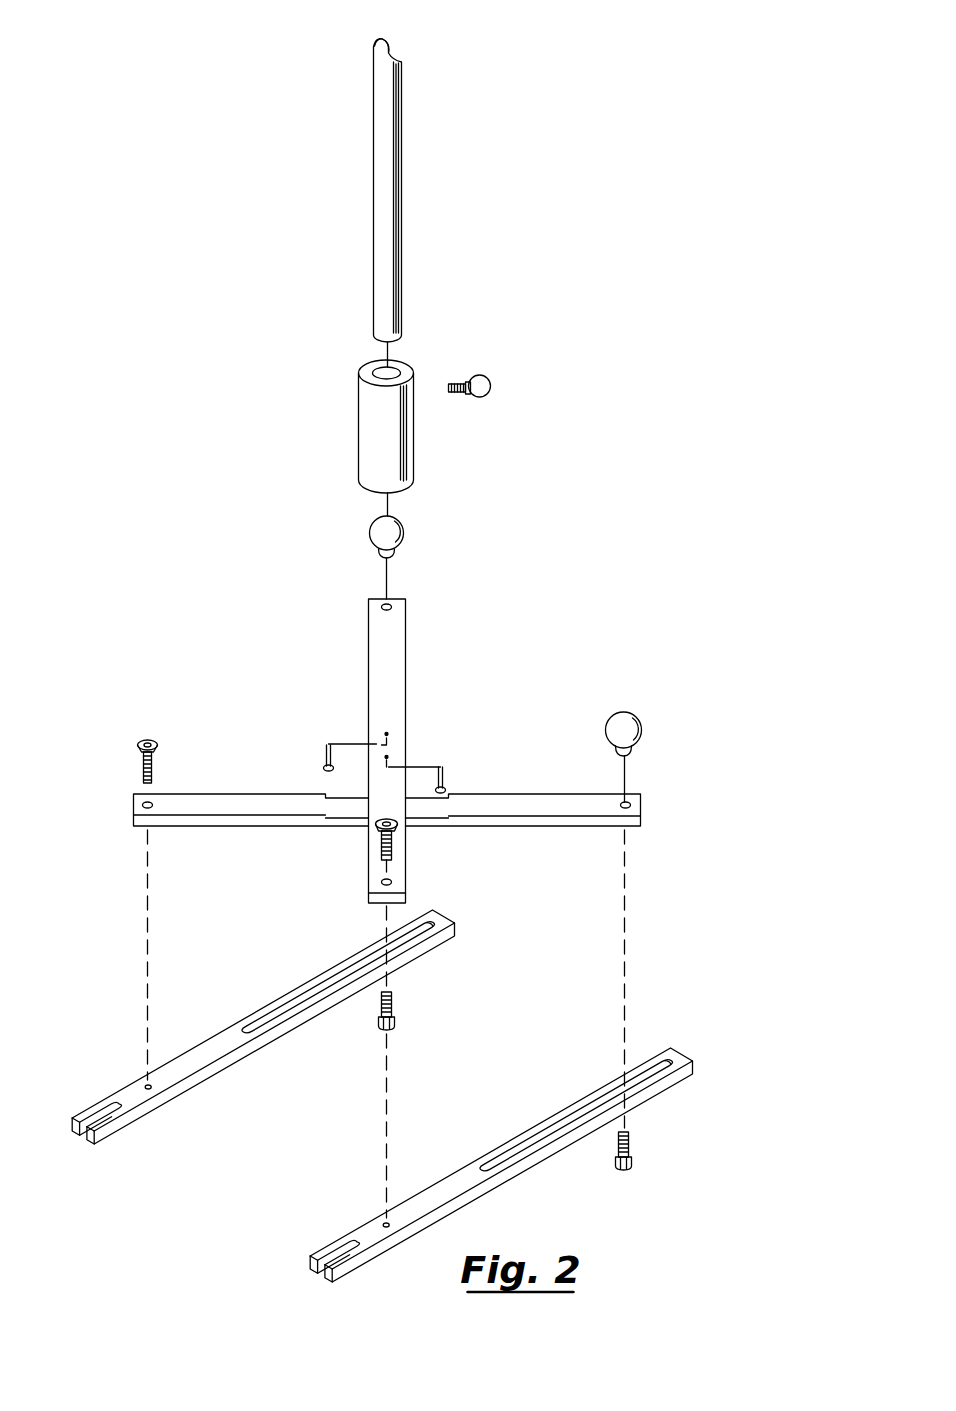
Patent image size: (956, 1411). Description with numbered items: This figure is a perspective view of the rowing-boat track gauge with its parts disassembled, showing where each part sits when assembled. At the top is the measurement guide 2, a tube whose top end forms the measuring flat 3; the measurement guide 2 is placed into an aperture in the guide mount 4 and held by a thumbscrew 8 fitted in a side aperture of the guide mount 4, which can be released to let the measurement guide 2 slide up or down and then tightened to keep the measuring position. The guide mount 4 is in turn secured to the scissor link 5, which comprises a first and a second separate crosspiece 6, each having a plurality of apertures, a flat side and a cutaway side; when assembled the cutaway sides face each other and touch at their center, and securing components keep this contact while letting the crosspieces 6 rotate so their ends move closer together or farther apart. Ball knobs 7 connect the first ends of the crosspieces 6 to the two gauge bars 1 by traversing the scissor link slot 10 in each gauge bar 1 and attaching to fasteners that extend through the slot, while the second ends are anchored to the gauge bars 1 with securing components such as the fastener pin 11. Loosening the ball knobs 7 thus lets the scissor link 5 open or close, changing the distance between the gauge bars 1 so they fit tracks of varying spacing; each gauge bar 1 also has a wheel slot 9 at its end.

The gauge bar 1 is at (377, 1262).
The measurement guide 2 is at (401, 190).
The measuring flat 3 is at (388, 52).
The guide mount 4 is at (413, 434).
The scissor link 5 is at (220, 794).
The crosspiece 6 is at (505, 793).
The ball knob 7 is at (405, 533).
The thumbscrew 8 is at (491, 388).
The wheel slot 9 is at (323, 1256).
The scissor link slot 10 is at (547, 1133).
The fastener pin 11 is at (135, 768).